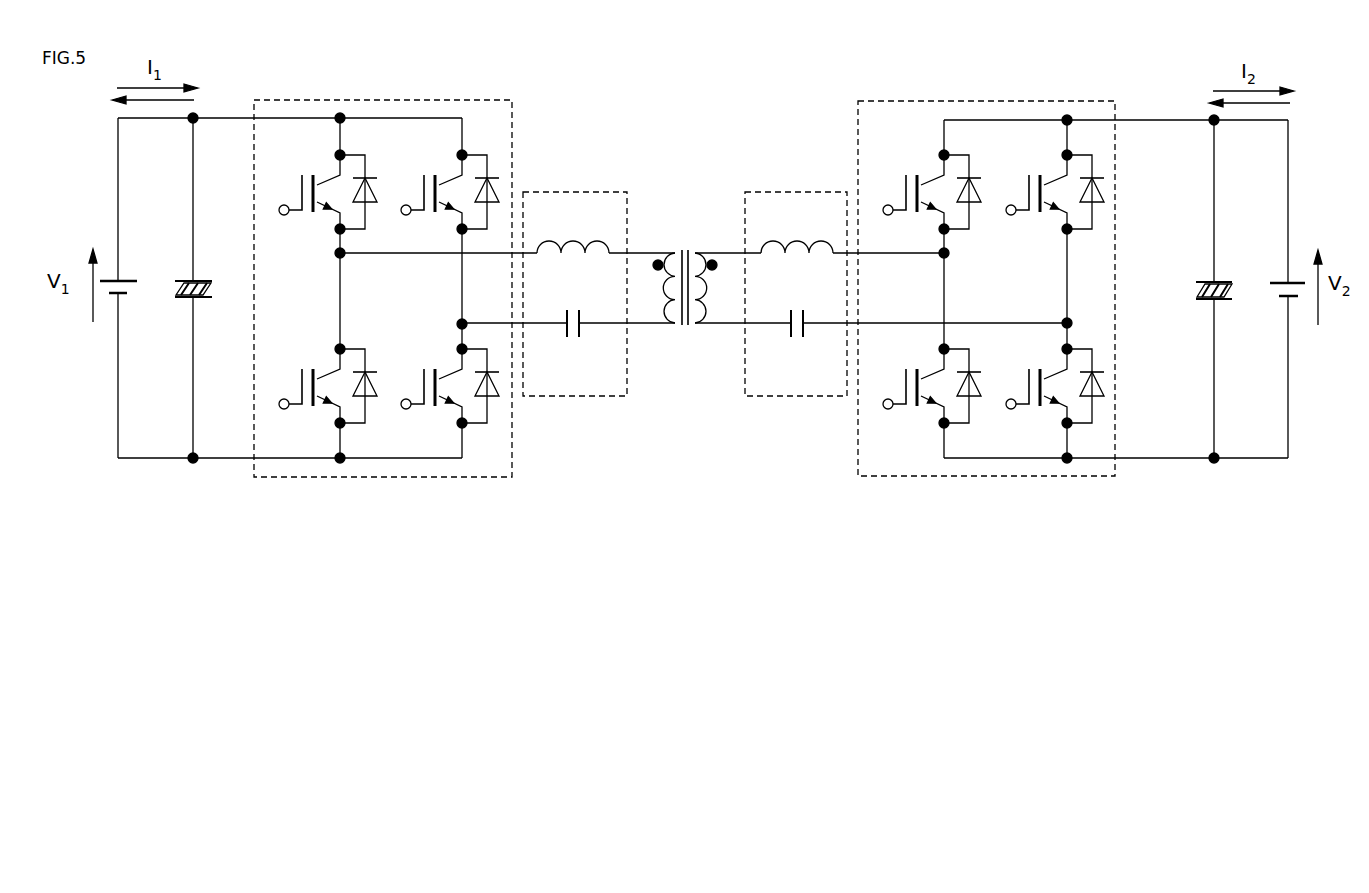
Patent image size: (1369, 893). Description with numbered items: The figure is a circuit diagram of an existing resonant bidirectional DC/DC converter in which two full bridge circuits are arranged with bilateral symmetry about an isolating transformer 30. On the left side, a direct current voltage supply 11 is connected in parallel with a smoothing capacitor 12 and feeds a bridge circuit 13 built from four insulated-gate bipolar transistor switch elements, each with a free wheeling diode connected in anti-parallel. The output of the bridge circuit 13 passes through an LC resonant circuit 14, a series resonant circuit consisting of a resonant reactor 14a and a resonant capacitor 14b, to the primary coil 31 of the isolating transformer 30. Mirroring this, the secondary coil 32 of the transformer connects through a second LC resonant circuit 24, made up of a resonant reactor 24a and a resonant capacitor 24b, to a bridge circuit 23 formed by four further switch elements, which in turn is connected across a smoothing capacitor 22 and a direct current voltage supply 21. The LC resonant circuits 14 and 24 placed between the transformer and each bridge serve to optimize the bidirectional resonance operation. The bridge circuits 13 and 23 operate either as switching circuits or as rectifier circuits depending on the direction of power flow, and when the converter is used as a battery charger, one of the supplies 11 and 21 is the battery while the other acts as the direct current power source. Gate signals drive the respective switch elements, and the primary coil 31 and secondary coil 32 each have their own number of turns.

The direct current voltage supply 11 is at (108, 305).
The smoothing capacitor 12 is at (183, 305).
The bridge circuit 13 is at (265, 478).
The LC resonant circuit 14 is at (595, 329).
The resonant reactor 14a is at (573, 231).
The resonant capacitor 14b is at (572, 342).
The direct current voltage supply 21 is at (1278, 305).
The smoothing capacitor 22 is at (1205, 305).
The bridge circuit 23 is at (1094, 478).
The LC resonant circuit 24 is at (778, 329).
The resonant reactor 24a is at (797, 231).
The resonant capacitor 24b is at (798, 342).
The isolating transformer 30 is at (685, 264).
The primary coil 31 is at (663, 288).
The secondary coil 32 is at (708, 288).